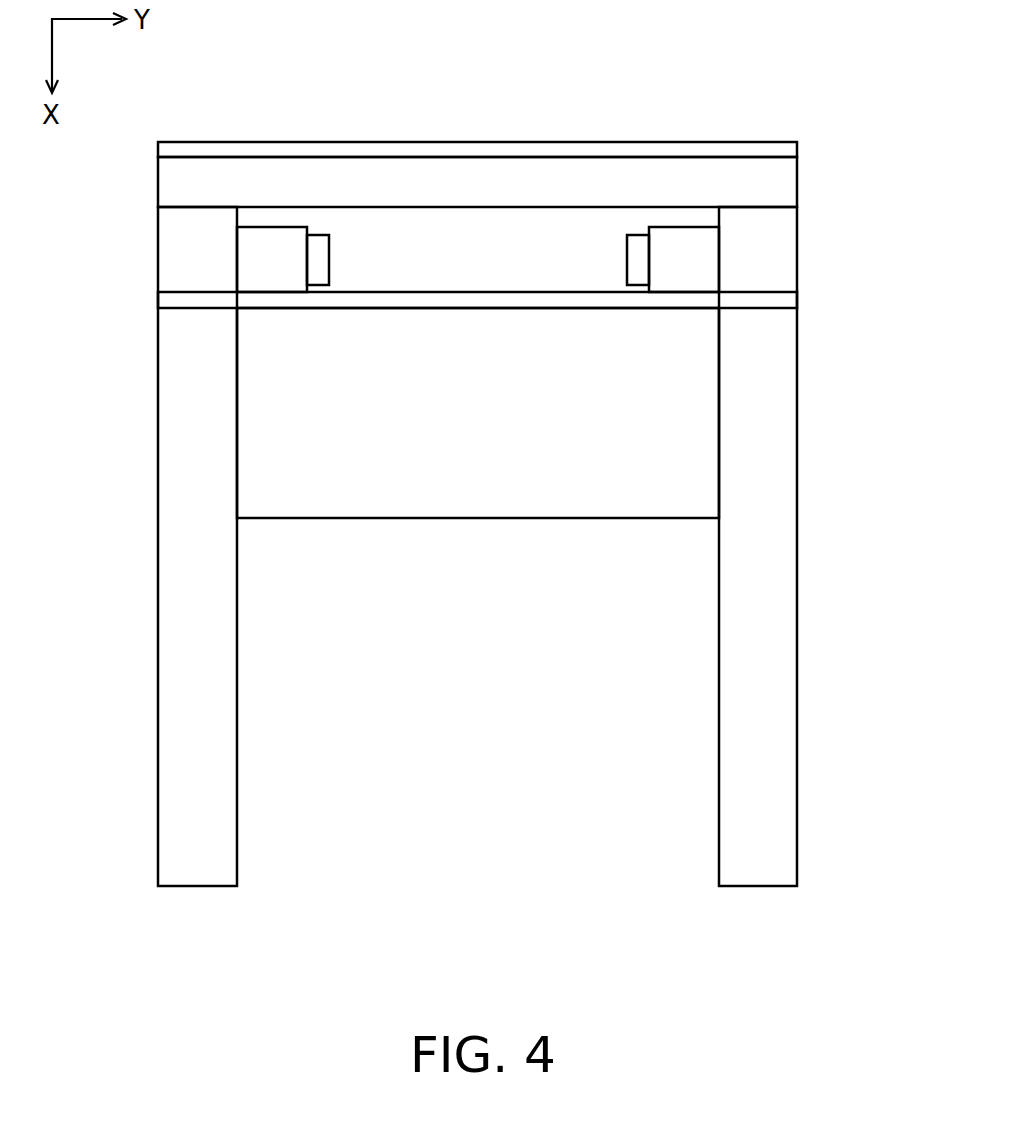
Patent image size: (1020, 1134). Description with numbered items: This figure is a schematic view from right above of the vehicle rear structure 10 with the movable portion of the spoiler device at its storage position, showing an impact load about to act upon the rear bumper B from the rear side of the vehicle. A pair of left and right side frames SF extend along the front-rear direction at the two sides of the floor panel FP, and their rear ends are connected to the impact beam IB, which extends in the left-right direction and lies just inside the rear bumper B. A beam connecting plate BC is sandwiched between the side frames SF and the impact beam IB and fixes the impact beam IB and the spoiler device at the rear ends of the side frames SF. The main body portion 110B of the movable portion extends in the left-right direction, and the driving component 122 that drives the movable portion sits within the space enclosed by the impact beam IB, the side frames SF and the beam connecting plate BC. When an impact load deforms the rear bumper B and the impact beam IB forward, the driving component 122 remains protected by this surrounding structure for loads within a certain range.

The driving component 122 is at (637, 250).
The main body portion 110B is at (693, 260).
The rear bumper B is at (766, 149).
The impact beam IB is at (766, 188).
The beam connecting plate BC is at (766, 302).
The side frame SF is at (188, 408).
The floor panel FP is at (676, 494).
The vehicle rear structure 10 is at (903, 948).